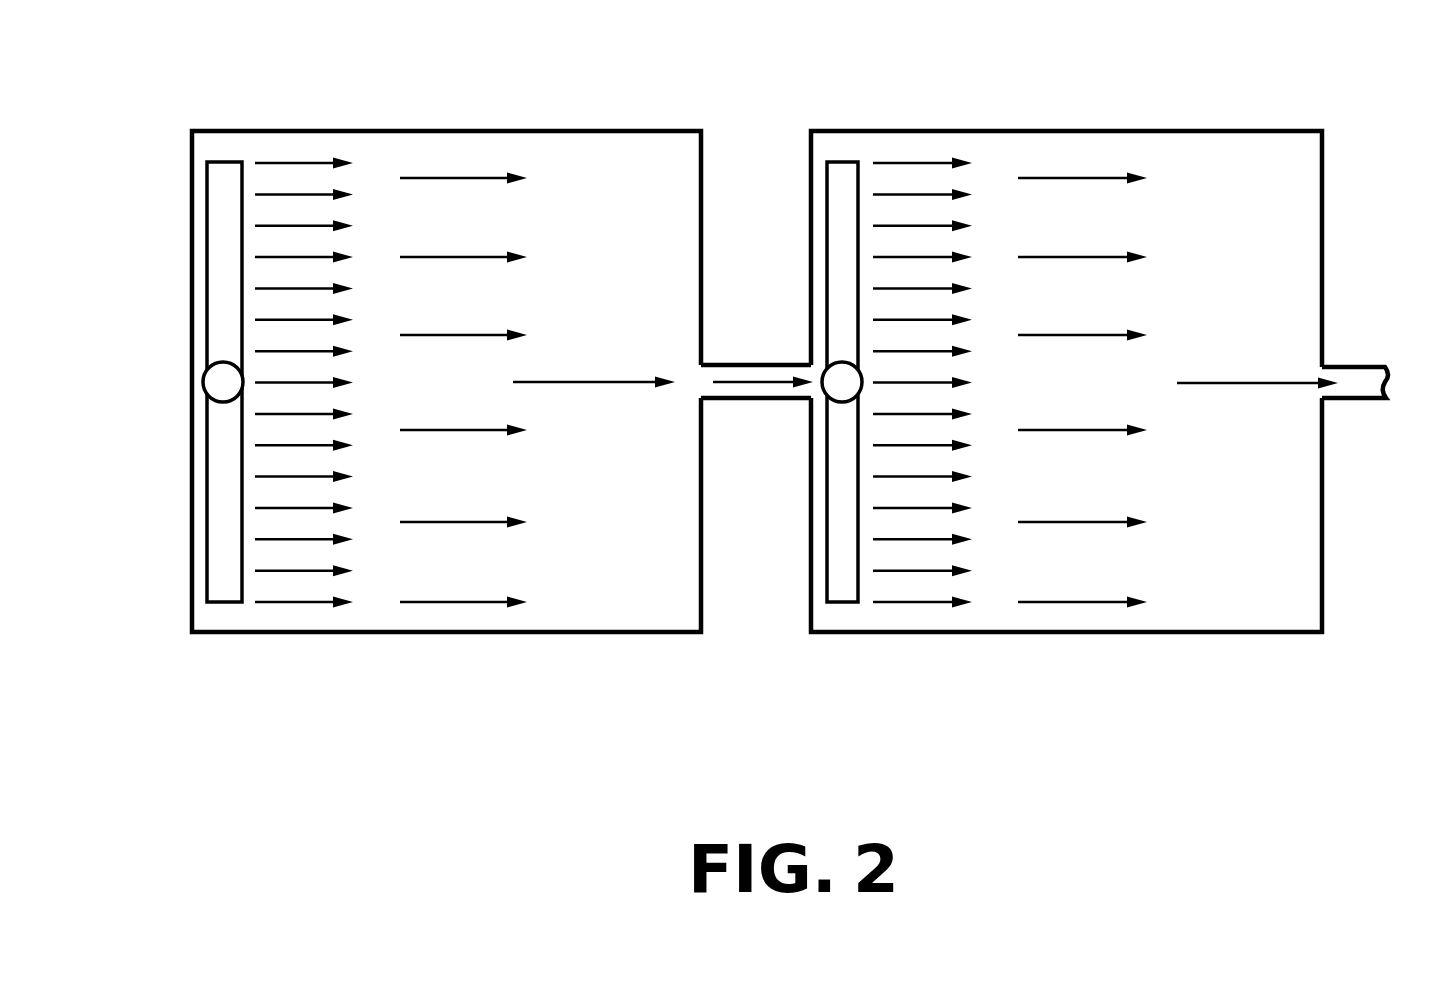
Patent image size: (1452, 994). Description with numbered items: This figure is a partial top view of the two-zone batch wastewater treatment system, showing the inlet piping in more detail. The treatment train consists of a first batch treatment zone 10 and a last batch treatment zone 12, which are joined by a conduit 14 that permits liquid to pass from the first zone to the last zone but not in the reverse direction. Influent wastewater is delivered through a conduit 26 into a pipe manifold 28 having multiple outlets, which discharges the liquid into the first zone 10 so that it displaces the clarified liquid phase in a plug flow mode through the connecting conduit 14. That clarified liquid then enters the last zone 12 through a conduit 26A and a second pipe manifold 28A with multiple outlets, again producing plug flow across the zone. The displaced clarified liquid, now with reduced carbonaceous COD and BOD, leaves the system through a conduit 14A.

The first batch treatment zone 10 is at (310, 130).
The last batch treatment zone 12 is at (1053, 131).
The conduit 14 is at (787, 365).
The conduit 14A is at (1357, 367).
The conduit 26 is at (205, 394).
The conduit 26A is at (845, 402).
The pipe manifold 28 is at (200, 223).
The pipe manifold 28A is at (818, 258).